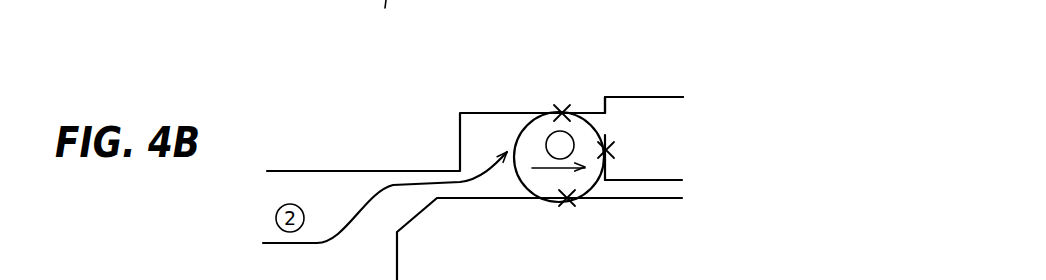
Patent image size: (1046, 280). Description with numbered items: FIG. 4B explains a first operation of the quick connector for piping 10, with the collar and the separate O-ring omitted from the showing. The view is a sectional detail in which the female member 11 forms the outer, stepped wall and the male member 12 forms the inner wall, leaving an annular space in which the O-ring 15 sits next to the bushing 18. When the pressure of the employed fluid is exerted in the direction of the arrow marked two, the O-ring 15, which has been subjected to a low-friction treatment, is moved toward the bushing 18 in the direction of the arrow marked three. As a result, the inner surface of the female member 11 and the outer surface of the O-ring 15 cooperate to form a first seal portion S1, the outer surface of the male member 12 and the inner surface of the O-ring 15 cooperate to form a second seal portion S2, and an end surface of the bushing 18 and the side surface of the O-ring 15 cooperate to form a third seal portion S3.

The rotary joint assembly 10 is at (777, 68).
The female member 11 is at (348, 165).
The male member 12 is at (663, 190).
The O-ring 15 is at (518, 138).
The bushing 18 is at (661, 97).
The first seal portion S1 is at (565, 98).
The second seal portion S2 is at (570, 213).
The third seal portion S3 is at (618, 148).